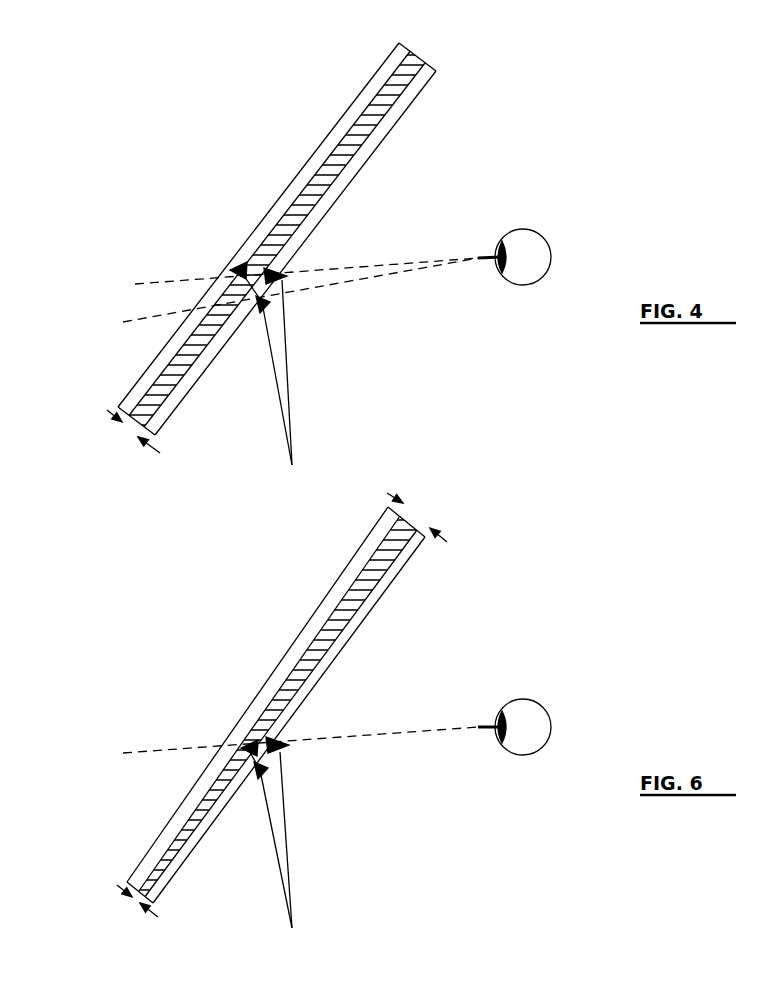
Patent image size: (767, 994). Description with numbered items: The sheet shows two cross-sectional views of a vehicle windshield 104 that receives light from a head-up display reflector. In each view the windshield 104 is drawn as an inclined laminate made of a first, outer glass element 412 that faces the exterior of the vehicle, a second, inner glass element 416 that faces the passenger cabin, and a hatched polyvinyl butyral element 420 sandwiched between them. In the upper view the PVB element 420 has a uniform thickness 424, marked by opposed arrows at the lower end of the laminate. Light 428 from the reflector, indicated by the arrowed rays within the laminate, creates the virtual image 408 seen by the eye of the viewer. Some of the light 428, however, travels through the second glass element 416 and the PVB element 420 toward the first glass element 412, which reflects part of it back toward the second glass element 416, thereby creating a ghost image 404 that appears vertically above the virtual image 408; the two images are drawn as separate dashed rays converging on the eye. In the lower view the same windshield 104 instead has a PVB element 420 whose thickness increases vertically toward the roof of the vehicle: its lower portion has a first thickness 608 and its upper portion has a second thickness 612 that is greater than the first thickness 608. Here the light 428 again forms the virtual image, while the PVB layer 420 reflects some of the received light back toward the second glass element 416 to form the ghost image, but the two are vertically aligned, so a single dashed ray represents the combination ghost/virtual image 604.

In FIG. 4, the windshield 104 is at (433, 133).
In FIG. 6, the windshield 104 is at (472, 546).
In FIG. 4, the first glass element 412 is at (290, 185).
In FIG. 6, the first glass element 412 is at (330, 608).
In FIG. 4, the second glass element 416 is at (352, 166).
In FIG. 6, the second glass element 416 is at (365, 582).
In FIG. 4, the polyvinyl butyral element 420 is at (410, 62).
In FIG. 6, the polyvinyl butyral element 420 is at (416, 533).
In FIG. 4, the ghost image 404 is at (135, 284).
In FIG. 4, the virtual image 408 is at (123, 322).
In FIG. 4, the uniform thickness 424 is at (127, 436).
In FIG. 4, the light 428 is at (292, 465).
In FIG. 6, the light 428 is at (292, 928).
In FIG. 6, the combination ghost/virtual image 604 is at (123, 753).
In FIG. 6, the first thickness 608 is at (128, 910).
In FIG. 6, the second thickness 612 is at (415, 507).